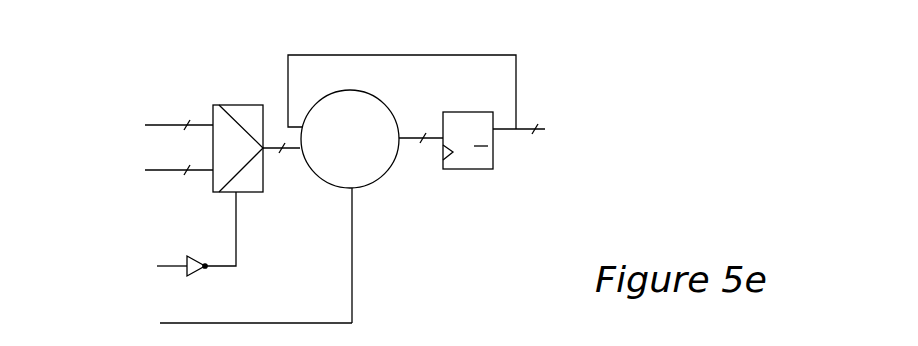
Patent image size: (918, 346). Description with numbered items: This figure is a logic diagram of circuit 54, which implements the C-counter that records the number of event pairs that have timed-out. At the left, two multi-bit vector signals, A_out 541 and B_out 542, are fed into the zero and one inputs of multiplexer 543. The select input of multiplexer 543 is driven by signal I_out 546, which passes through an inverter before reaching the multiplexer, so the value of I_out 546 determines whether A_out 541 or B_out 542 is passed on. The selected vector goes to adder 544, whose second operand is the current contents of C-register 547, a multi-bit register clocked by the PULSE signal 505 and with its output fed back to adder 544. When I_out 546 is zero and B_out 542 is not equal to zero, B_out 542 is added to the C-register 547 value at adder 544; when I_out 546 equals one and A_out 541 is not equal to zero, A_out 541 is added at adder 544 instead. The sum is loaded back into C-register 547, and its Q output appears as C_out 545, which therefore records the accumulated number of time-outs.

The circuit 54 is at (680, 56).
The A_out signal 541 is at (113, 104).
The B_out signal 542 is at (113, 153).
The multiplexer 543 is at (238, 103).
The adder 544 is at (367, 179).
The C_out signal 545 is at (573, 117).
The I_out signal 546 is at (115, 254).
The C-register 547 is at (460, 169).
The PULSE clock signal 505 is at (115, 319).